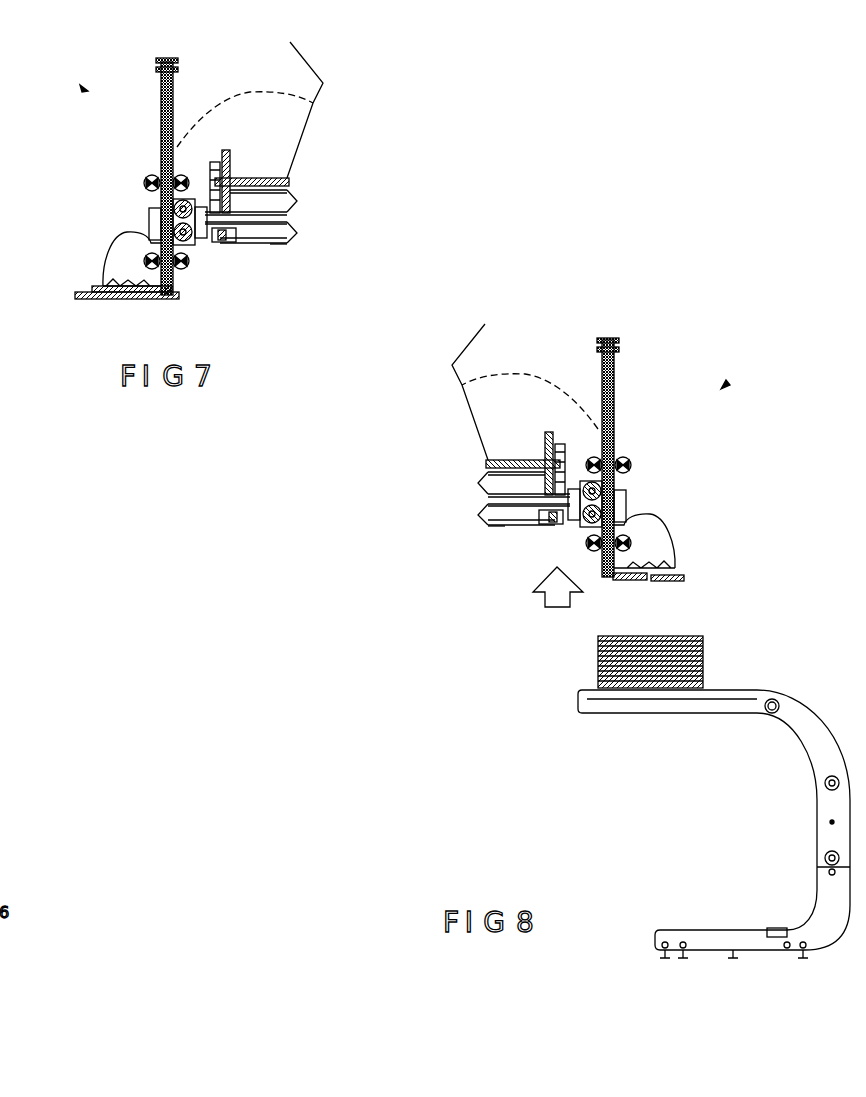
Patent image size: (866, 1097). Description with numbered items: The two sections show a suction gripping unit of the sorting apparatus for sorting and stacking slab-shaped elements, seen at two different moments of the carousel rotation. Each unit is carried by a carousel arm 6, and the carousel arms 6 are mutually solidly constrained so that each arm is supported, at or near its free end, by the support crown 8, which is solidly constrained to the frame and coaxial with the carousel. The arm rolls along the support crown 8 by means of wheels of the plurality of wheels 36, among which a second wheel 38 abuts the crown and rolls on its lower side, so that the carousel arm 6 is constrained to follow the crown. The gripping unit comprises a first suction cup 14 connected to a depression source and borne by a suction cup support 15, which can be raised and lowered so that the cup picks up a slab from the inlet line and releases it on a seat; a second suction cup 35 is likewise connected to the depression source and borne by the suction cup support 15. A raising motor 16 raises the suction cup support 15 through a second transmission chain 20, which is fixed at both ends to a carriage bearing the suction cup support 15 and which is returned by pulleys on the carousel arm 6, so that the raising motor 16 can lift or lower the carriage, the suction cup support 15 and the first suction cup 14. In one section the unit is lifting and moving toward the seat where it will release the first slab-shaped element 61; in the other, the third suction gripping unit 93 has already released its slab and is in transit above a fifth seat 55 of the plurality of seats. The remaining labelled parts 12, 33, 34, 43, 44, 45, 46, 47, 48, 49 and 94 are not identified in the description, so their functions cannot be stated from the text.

In FIG. 7, the carousel arm 6 is at (280, 246).
In FIG. 8, the carousel arm 6 is at (483, 533).
In FIG. 7, the support crown 8 is at (292, 170).
In FIG. 8, the support crown 8 is at (478, 461).
In FIG. 8, the stack of sheets 12 is at (706, 656).
In FIG. 8, the first suction cup 14 is at (617, 581).
In FIG. 8, the suction cup support 15 is at (690, 570).
In FIG. 7, the raising motor 16 is at (200, 245).
In FIG. 7, the second transmission chain 20 is at (297, 235).
In FIG. 8, the second transmission chain 20 is at (480, 491).
In FIG. 7, the upper rail 33 is at (212, 165).
In FIG. 8, the upper rail 33 is at (542, 447).
In FIG. 7, the rail 34 is at (297, 203).
In FIG. 7, the second suction cup 35 is at (180, 295).
In FIG. 8, the second suction cup 35 is at (665, 582).
In FIG. 7, the plurality of wheels 36 is at (232, 178).
In FIG. 8, the plurality of wheels 36 is at (538, 428).
In FIG. 8, the second wheel 38 is at (528, 460).
In FIG. 7, the clamping element 43 is at (230, 245).
In FIG. 8, the clamping element 43 is at (540, 523).
In FIG. 7, the guide roller 44 is at (95, 287).
In FIG. 8, the guide roller 44 is at (572, 522).
In FIG. 7, the cam 45 is at (102, 272).
In FIG. 7, the vertical guide 46 is at (222, 150).
In FIG. 8, the vertical guide 46 is at (558, 440).
In FIG. 7, the column 47 is at (160, 104).
In FIG. 8, the column 47 is at (616, 361).
In FIG. 7, the carriage 48 is at (182, 176).
In FIG. 8, the carriage 48 is at (588, 536).
In FIG. 7, the roller 49 is at (147, 215).
In FIG. 8, the roller 49 is at (624, 460).
In FIG. 8, the fifth seat 55 is at (650, 760).
In FIG. 7, the first slab-shaped element 61 is at (78, 300).
In FIG. 8, the third suction gripping unit 93 is at (723, 387).
In FIG. 7, the assembly 94 is at (85, 90).